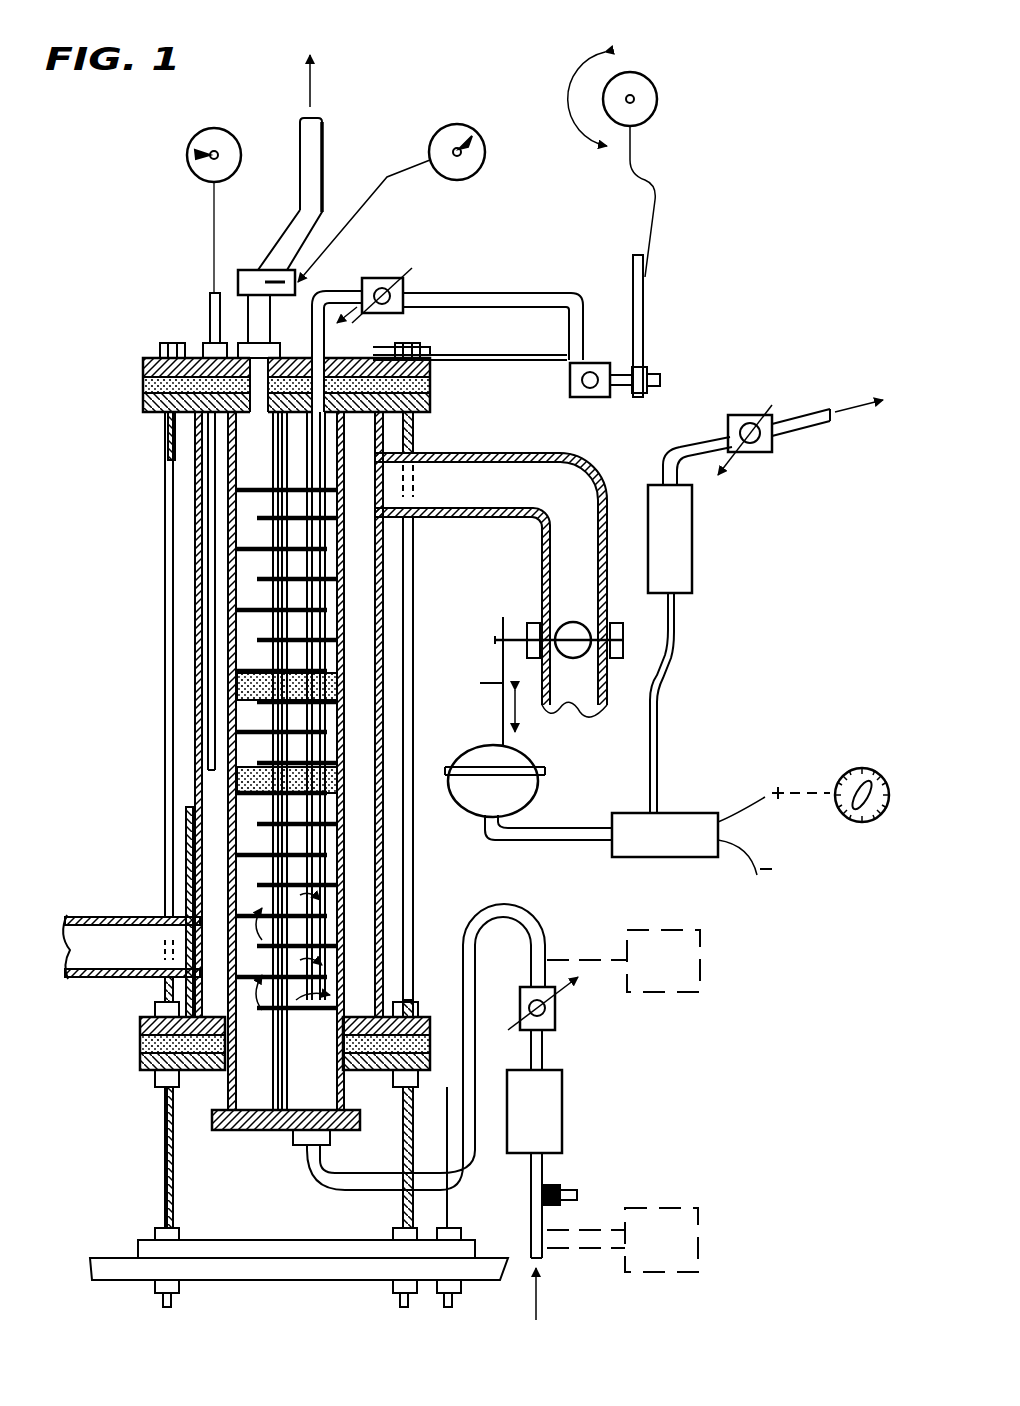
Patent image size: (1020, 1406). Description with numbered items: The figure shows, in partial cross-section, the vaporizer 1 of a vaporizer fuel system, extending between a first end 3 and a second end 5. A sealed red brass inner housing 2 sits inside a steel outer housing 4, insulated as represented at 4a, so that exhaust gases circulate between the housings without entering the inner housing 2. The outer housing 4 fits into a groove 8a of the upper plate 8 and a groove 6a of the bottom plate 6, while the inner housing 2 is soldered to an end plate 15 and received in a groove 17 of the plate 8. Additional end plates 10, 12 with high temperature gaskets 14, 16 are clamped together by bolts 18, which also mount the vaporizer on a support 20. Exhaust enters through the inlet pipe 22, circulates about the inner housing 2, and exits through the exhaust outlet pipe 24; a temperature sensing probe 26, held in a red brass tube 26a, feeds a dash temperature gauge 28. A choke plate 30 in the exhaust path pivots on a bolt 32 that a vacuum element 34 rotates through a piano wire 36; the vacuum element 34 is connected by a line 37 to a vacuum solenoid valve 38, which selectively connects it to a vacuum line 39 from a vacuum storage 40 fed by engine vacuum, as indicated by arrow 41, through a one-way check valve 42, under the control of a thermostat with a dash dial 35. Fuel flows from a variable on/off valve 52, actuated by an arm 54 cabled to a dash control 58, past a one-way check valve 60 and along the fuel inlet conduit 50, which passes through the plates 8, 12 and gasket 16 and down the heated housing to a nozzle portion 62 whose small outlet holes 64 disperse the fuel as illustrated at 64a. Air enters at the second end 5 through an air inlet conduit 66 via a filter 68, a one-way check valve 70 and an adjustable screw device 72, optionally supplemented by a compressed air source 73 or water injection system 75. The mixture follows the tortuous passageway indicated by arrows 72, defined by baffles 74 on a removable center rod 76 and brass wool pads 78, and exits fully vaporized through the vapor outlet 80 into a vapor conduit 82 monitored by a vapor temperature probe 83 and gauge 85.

The apparatus 1 is at (150, 602).
The inner housing 2 is at (214, 1126).
The first end 3 is at (125, 312).
The outer housing 4 is at (194, 770).
The insulation 4a is at (185, 840).
The second end 5 is at (140, 1112).
The bottom plate 6 is at (440, 1024).
The groove 6a is at (412, 1005).
The upper plate 8 is at (432, 404).
The groove 8a is at (168, 424).
The end plate 10 is at (425, 1074).
The end plate 12 is at (425, 359).
The gasket 14 is at (140, 1038).
The end plate 15 is at (258, 1132).
The gasket 16 is at (143, 366).
The groove 17 is at (312, 415).
The bolts 18 is at (163, 700).
The support 20 is at (105, 1258).
The exhaust inlet pipe 22 is at (115, 915).
The exhaust outlet pipe 24 is at (596, 472).
The temperature sensing probe 26 is at (210, 304).
The red brass tube 26a is at (208, 494).
The temperature gauge 28 is at (214, 128).
The choke plate 30 is at (573, 622).
The bolt 32 is at (505, 620).
The vacuum element 34 is at (535, 792).
The electric temperature control dial 35 is at (858, 822).
The piano wire 36 is at (500, 650).
The line 37 is at (580, 842).
The vacuum solenoid valve 38 is at (690, 860).
The vacuum line 39 is at (658, 742).
The vacuum storage 40 is at (693, 562).
The arrow 41 is at (860, 412).
The one-way check valve 42 is at (760, 456).
The fuel inlet conduit 50 is at (505, 292).
The variable on/off valve 52 is at (572, 398).
The arm 54 is at (645, 314).
The control 58 is at (630, 72).
The one-way check valve 60 is at (382, 278).
The nozzle portion 62 is at (335, 924).
The outlet holes 64 is at (335, 980).
The fuel dispersion 64a is at (300, 1010).
The air inlet conduit 66 is at (488, 906).
The filter 68 is at (565, 1124).
The one-way check valve 70 is at (556, 1016).
The adjustable screw device 72 is at (272, 1027).
The source of compressed air 73 is at (698, 1264).
The baffles 74 is at (330, 647).
The water injection system 75 is at (700, 986).
The center rod 76 is at (278, 442).
The pads 78 is at (237, 682).
The vapor outlet 80 is at (310, 350).
The vapor conduit 82 is at (300, 142).
The vapor temperature probe 83 is at (297, 276).
The vapor temperature gauge 85 is at (482, 142).